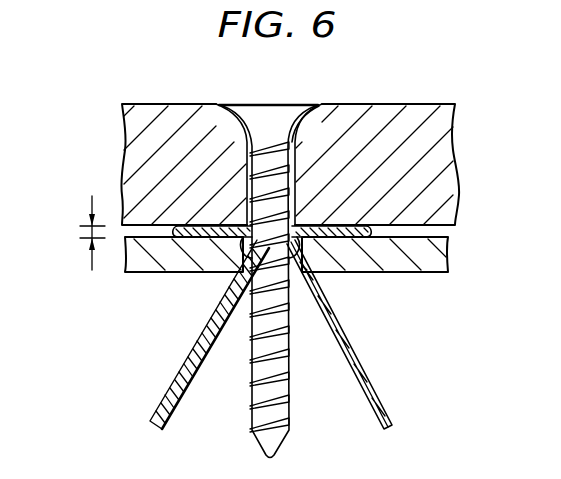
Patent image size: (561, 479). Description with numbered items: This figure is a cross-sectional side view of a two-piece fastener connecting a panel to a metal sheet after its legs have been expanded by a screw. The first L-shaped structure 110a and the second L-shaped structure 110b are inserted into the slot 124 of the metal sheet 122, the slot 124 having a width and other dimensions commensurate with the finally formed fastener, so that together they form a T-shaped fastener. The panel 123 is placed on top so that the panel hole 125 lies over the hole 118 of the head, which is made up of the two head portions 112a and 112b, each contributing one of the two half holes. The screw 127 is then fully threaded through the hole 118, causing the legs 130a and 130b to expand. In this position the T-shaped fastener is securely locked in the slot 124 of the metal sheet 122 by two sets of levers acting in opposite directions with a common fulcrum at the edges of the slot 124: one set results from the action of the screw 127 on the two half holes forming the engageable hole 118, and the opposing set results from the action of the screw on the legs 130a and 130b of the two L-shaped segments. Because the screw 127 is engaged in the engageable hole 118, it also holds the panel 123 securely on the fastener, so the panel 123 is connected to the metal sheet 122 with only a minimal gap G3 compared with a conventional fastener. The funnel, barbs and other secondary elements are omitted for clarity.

The first L-shaped structure 110a is at (384, 381).
The second L-shaped structure 110b is at (160, 355).
The head portion 112a is at (410, 240).
The head portion 112b is at (180, 232).
The hole 118 is at (243, 236).
The metal sheet 122 is at (447, 251).
The panel 123 is at (452, 143).
The slot 124 is at (298, 238).
The panel hole 125 is at (324, 125).
The screw 127 is at (268, 115).
The leg 130a is at (392, 404).
The leg 130b is at (153, 406).
The gap G3 is at (92, 197).